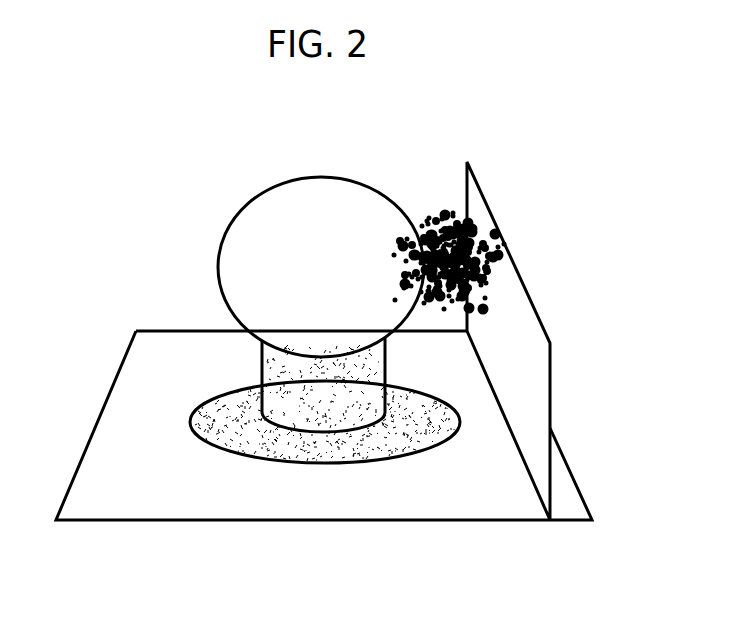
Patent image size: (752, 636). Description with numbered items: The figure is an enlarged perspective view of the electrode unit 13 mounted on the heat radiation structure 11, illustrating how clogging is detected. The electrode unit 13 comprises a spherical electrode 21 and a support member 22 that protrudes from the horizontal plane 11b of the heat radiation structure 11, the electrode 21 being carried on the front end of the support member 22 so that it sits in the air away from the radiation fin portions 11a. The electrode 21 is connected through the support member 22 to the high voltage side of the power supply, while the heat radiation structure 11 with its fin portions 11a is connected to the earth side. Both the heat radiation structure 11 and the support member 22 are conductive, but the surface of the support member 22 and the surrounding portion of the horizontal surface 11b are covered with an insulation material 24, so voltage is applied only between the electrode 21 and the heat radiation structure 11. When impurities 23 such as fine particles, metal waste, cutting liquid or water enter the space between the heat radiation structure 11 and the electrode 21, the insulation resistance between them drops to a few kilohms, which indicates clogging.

The heat radiation structure 11 is at (377, 380).
The fin portions 11a is at (515, 360).
The horizontal plane 11b is at (153, 492).
The electrode unit 13 is at (253, 291).
The electrode 21 is at (236, 218).
The support member 22 is at (260, 360).
The impurities 23 is at (437, 215).
The insulation material 24 is at (247, 433).